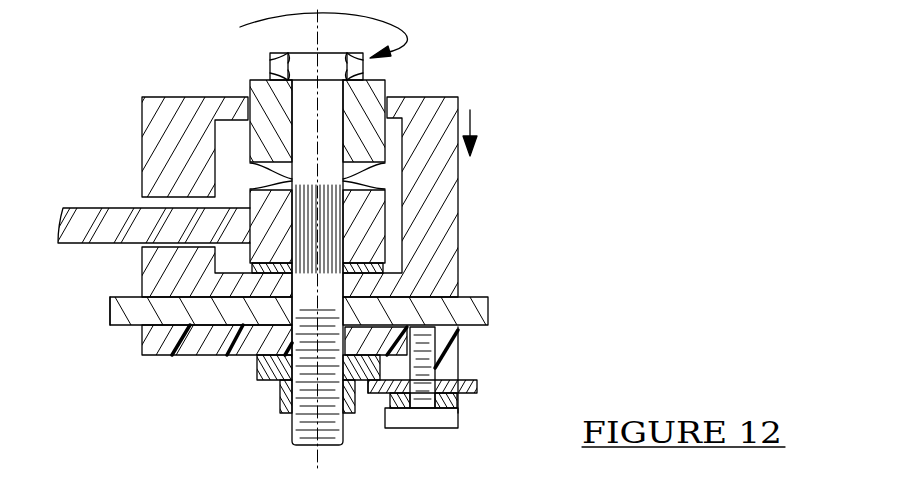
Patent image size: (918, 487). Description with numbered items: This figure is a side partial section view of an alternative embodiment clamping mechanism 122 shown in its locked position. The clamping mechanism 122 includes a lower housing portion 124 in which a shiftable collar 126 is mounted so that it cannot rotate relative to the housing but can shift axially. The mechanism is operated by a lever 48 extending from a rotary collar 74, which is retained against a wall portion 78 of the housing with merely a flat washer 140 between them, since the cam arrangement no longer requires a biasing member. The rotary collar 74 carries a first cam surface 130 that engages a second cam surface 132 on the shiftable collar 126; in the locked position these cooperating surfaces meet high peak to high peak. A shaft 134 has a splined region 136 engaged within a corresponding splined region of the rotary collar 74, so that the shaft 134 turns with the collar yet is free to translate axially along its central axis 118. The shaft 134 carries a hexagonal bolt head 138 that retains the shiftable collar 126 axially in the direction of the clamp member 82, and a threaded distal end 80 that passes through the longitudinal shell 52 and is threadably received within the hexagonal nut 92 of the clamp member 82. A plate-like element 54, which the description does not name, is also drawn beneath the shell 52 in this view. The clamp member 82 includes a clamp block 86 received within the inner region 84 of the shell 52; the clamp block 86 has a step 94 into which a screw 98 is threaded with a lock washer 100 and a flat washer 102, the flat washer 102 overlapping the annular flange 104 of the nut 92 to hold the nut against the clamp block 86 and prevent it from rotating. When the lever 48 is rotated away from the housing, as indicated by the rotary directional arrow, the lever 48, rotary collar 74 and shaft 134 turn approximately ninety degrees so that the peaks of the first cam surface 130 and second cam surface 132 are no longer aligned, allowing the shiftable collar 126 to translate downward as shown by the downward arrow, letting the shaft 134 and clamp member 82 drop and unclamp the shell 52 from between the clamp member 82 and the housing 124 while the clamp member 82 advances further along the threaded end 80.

The lever 48 is at (90, 208).
The longitudinal shell 52 is at (110, 312).
The mounting plate 54 is at (488, 298).
The rotary collar 74 is at (385, 222).
The wall portion 78 is at (240, 327).
The threaded distal end 80 is at (305, 445).
The clamp member 82 is at (500, 349).
The inner region 84 is at (478, 330).
The clamp block 86 is at (165, 355).
The hexagonal nut 92 is at (280, 403).
The step 94 is at (455, 370).
The screw 98 is at (457, 428).
The lock washer 100 is at (458, 400).
The flat washer 102 is at (378, 393).
The annular flange 104 is at (258, 366).
The central axis 118 is at (317, 43).
The clamping mechanism 122 is at (498, 33).
The lower housing portion 124 is at (458, 97).
The shiftable collar 126 is at (250, 80).
The first cam surface 130 is at (357, 184).
The second cam surface 132 is at (270, 166).
The shaft 134 is at (343, 100).
The splined region 136 is at (328, 237).
The hexagonal bolt head 138 is at (270, 57).
The flat washer 140 is at (252, 267).